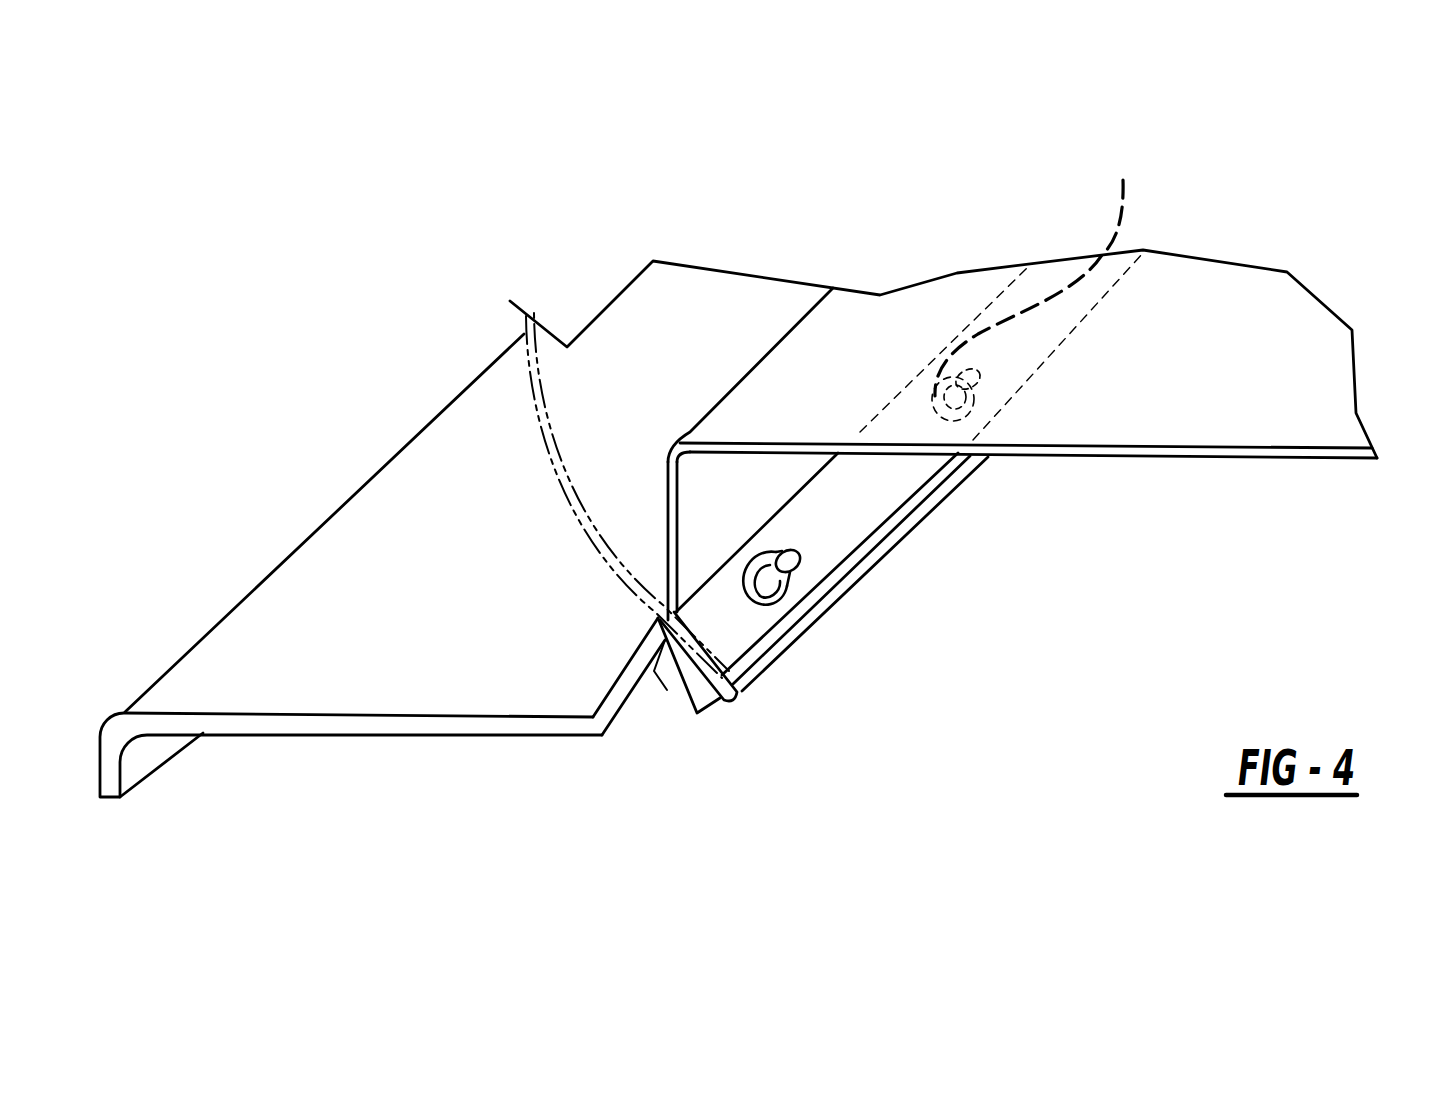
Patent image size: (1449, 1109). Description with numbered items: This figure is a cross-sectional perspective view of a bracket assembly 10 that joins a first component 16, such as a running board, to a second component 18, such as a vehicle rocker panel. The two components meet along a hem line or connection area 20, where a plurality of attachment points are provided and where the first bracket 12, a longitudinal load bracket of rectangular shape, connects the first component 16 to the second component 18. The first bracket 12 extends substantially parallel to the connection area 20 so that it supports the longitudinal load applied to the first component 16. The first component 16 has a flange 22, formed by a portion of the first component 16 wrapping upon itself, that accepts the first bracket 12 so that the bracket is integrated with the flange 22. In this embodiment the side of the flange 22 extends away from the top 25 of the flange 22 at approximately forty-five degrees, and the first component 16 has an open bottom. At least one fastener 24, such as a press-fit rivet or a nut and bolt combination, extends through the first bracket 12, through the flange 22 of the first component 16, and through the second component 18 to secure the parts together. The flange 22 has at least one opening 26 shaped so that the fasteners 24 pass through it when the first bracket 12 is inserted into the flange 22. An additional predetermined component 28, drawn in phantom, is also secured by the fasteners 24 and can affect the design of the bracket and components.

The bracket assembly 10 is at (947, 171).
The first bracket 12 is at (694, 713).
The first component 16 is at (108, 800).
The second component 18 is at (1357, 373).
The connection area 20 is at (731, 686).
The flange 22 is at (757, 671).
The fastener 24 is at (980, 388).
The top of the flange 25 is at (666, 656).
The opening 26 is at (920, 695).
The additional predetermined component 28 is at (523, 332).